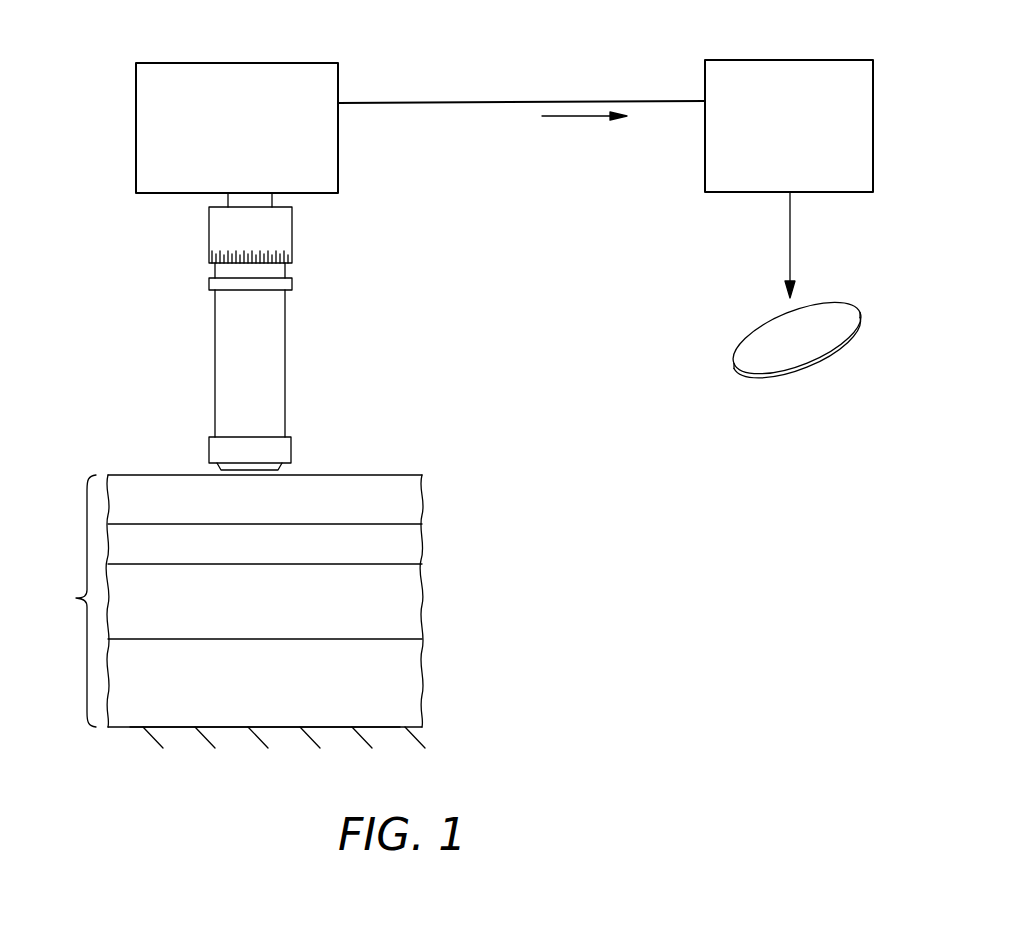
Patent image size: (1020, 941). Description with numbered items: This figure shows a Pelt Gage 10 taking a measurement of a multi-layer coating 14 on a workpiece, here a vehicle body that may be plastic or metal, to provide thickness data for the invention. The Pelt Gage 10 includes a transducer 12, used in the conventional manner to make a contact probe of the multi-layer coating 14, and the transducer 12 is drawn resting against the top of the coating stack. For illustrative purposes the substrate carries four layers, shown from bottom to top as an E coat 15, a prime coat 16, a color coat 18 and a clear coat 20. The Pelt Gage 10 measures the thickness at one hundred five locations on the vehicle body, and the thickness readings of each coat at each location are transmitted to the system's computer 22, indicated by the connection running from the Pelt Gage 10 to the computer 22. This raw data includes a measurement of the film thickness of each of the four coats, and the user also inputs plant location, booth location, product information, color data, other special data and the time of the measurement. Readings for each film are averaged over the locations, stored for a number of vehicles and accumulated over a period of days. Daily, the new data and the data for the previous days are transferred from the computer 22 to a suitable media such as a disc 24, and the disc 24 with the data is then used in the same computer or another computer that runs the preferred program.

The Pelt Gage 10 is at (221, 66).
The transducer 12 is at (288, 445).
The multi-layer coating 14 is at (260, 611).
The E coat 15 is at (424, 690).
The prime coat 16 is at (428, 608).
The color coat 18 is at (426, 547).
The clear coat 20 is at (427, 498).
The computer 22 is at (810, 67).
The disc 24 is at (758, 328).